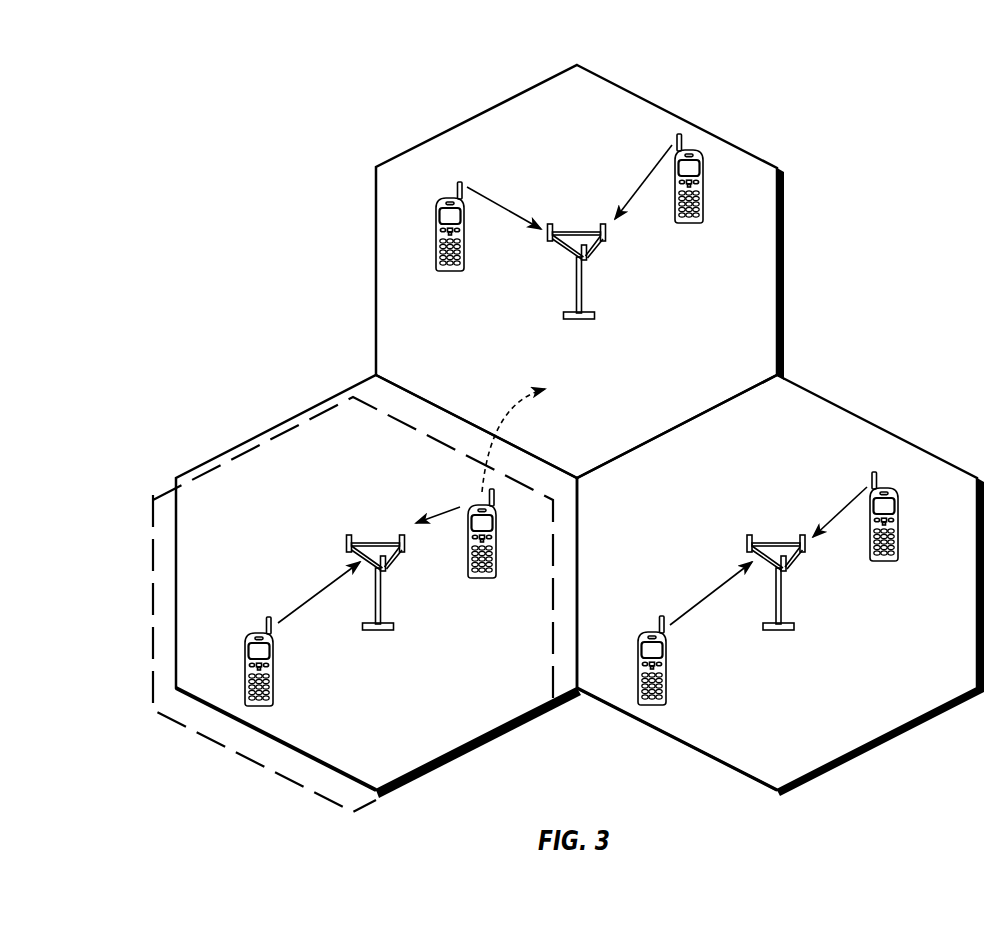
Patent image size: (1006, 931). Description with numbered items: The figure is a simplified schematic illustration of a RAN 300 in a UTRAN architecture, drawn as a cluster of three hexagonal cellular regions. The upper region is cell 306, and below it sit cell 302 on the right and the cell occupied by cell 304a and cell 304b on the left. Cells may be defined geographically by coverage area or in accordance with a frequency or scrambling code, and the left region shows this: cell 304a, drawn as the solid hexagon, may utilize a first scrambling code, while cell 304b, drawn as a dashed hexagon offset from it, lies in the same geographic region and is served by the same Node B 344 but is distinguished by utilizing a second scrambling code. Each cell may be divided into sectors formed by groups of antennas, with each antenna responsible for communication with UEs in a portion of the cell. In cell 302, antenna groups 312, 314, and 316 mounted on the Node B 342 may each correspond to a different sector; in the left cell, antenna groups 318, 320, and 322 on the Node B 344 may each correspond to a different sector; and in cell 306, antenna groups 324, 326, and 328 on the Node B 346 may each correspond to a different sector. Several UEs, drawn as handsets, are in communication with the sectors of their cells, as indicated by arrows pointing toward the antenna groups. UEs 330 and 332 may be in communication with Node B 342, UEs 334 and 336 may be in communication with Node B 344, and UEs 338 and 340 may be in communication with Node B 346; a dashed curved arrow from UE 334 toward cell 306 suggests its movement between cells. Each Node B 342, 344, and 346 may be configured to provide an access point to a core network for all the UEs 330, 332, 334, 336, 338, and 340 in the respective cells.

The RAN 300 is at (887, 95).
The cell 302 is at (878, 427).
The cell 304a is at (253, 438).
The cell 304b is at (152, 518).
The cell 306 is at (661, 107).
The antenna group 312 is at (748, 536).
The antenna group 314 is at (786, 571).
The antenna group 316 is at (805, 549).
The antenna group 318 is at (385, 571).
The antenna group 320 is at (404, 552).
The antenna group 322 is at (348, 537).
The antenna group 324 is at (549, 243).
The antenna group 326 is at (586, 260).
The antenna group 328 is at (605, 242).
The UE 330 is at (898, 514).
The UE 332 is at (638, 654).
The UE 334 is at (497, 527).
The UE 336 is at (245, 656).
The UE 338 is at (448, 268).
The UE 340 is at (693, 226).
The Node B 342 is at (778, 543).
The Node B 344 is at (377, 543).
The Node B 346 is at (578, 232).